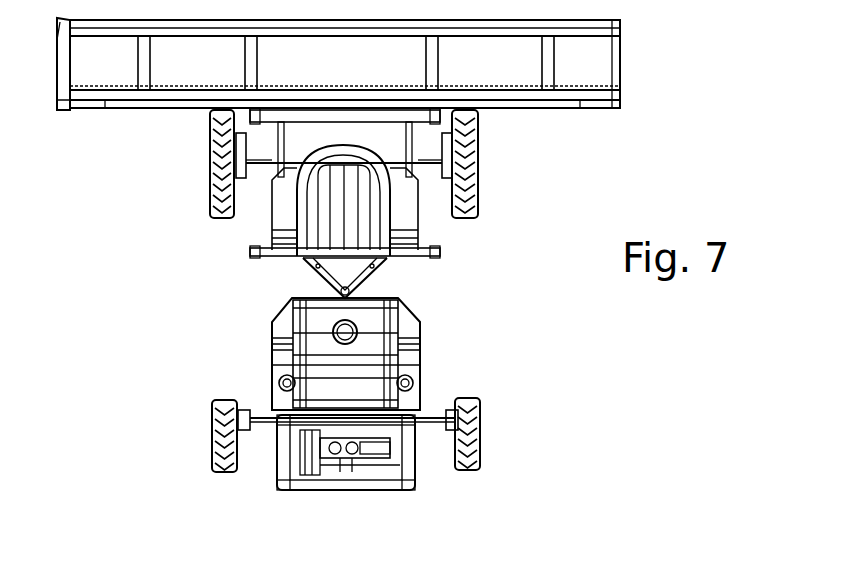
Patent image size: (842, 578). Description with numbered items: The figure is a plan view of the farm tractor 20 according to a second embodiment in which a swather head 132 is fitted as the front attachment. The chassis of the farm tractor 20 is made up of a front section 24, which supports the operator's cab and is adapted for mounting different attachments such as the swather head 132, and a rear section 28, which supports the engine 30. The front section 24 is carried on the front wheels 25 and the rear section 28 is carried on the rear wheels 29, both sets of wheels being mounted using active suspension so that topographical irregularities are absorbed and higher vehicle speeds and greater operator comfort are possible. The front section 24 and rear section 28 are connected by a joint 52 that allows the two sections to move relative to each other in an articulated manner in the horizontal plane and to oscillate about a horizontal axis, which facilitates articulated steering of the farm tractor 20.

The swather head 132 is at (620, 43).
The farm tractor 20 is at (198, 272).
The front wheels 25 is at (478, 163).
The front section 24 is at (418, 229).
The joint 52 is at (394, 281).
The rear section 28 is at (418, 338).
The rear wheels 29 is at (480, 424).
The engine 30 is at (283, 460).